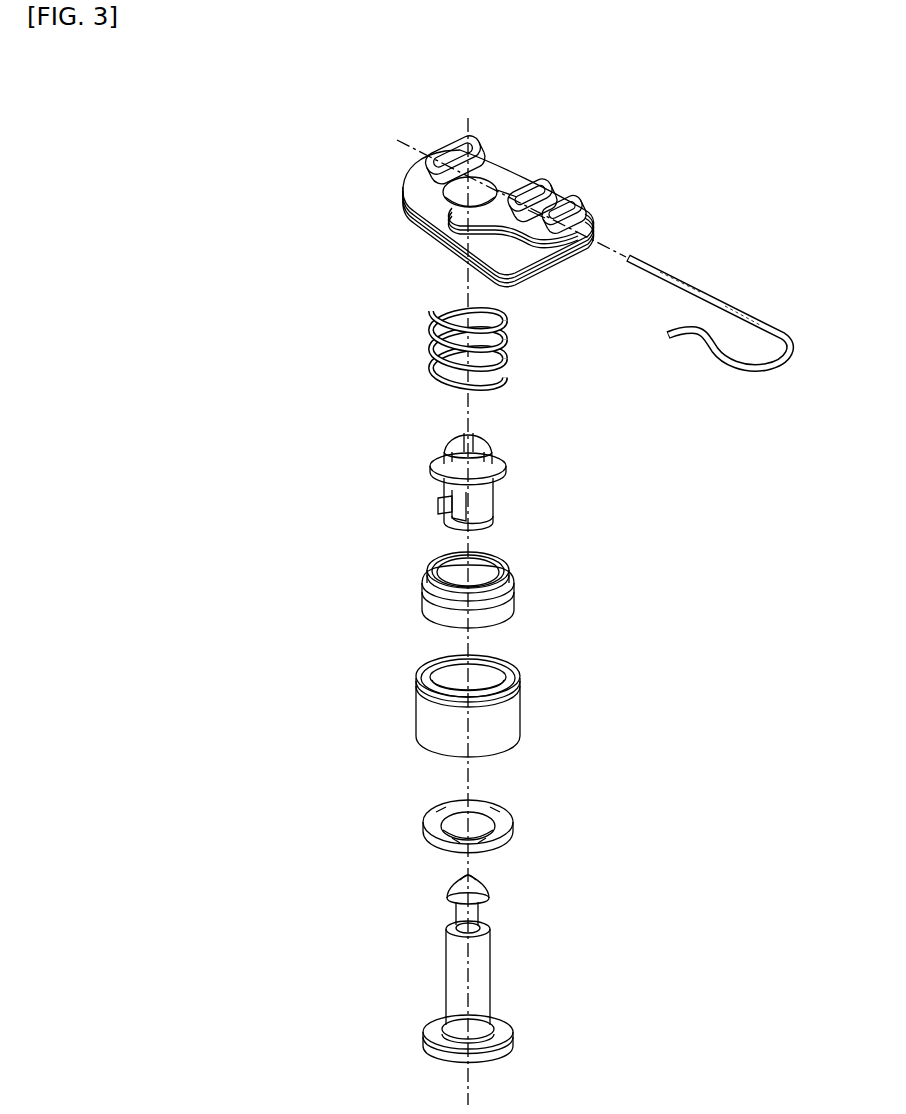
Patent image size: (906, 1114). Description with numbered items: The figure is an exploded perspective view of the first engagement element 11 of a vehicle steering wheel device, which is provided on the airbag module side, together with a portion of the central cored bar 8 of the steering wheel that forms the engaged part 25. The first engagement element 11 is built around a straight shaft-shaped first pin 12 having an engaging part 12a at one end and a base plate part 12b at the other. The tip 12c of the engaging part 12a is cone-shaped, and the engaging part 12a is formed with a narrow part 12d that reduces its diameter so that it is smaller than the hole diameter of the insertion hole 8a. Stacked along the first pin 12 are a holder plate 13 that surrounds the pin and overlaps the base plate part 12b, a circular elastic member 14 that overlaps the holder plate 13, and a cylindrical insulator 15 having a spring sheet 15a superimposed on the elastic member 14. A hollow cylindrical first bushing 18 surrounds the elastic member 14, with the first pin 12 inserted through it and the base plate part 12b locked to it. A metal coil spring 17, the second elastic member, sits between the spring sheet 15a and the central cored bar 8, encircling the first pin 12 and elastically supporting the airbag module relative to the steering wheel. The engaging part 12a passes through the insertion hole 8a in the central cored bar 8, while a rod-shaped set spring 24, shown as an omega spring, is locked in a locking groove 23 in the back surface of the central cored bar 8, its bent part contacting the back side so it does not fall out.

The central cored bar 8 is at (400, 205).
The insertion hole 8a is at (487, 183).
The locking groove 23 is at (477, 157).
The rod-shaped set spring 24 is at (748, 310).
The engaged part 25 is at (688, 198).
The coil spring 17 is at (503, 370).
The insulator 15 is at (463, 484).
The spring sheet 15a is at (498, 465).
The elastic member 14 is at (513, 585).
The first engagement element 11 is at (628, 648).
The first bushing 18 is at (420, 715).
The holder plate 13 is at (513, 815).
The first pin 12 is at (501, 963).
The engaging part 12a is at (489, 897).
The base plate part 12b is at (511, 1044).
The tip 12c is at (480, 888).
The narrow part 12d is at (478, 915).